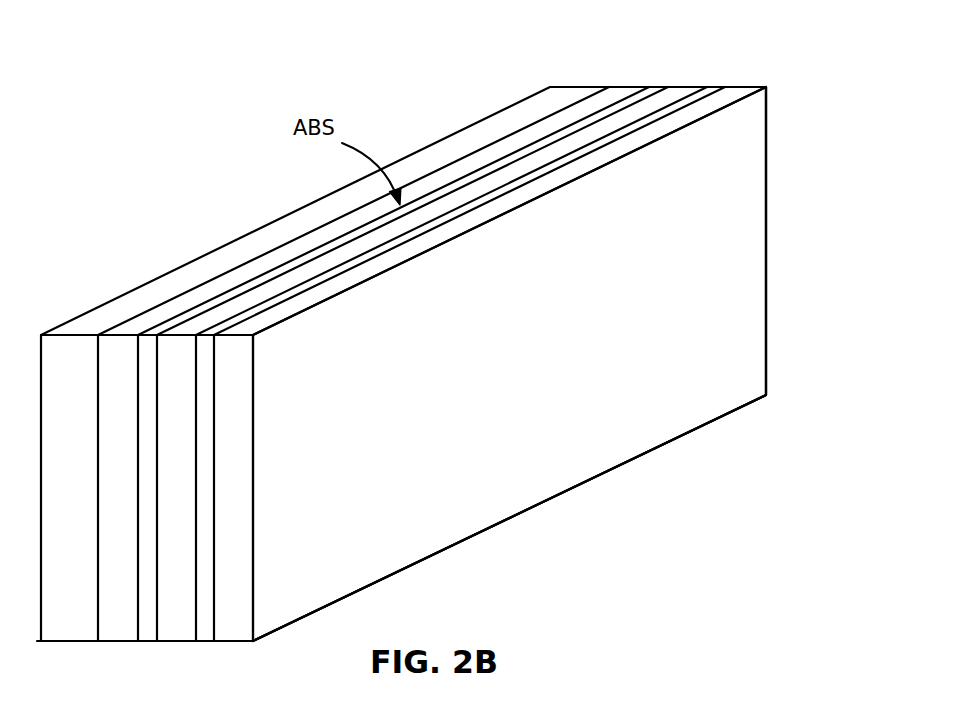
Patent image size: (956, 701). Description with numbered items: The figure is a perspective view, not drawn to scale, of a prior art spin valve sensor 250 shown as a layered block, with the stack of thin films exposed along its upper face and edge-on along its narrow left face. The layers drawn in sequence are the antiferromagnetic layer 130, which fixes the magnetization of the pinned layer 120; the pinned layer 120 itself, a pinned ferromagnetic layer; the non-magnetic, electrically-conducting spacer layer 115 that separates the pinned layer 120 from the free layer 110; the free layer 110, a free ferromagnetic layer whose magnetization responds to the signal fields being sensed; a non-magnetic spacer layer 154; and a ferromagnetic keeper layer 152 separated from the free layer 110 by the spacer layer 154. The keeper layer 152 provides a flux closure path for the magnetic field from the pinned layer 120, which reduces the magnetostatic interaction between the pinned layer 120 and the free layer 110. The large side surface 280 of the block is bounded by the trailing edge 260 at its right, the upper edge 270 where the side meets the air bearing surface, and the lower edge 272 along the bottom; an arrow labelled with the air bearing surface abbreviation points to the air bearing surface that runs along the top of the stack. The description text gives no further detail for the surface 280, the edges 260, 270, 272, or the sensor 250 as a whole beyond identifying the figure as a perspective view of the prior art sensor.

The slider 250 is at (612, 553).
The antiferromagnetic layer 130 is at (570, 100).
The pinned layer 120 is at (622, 90).
The spacer layer 115 is at (647, 88).
The free layer 110 is at (677, 88).
The non-magnetic spacer layer 154 is at (708, 92).
The keeper layer 152 is at (737, 100).
The side surface of slider 280 is at (543, 353).
The trailing edge of slider 260 is at (767, 185).
The edge between ABS and side surface 270 is at (425, 252).
The bottom edge of side surface 272 is at (542, 502).